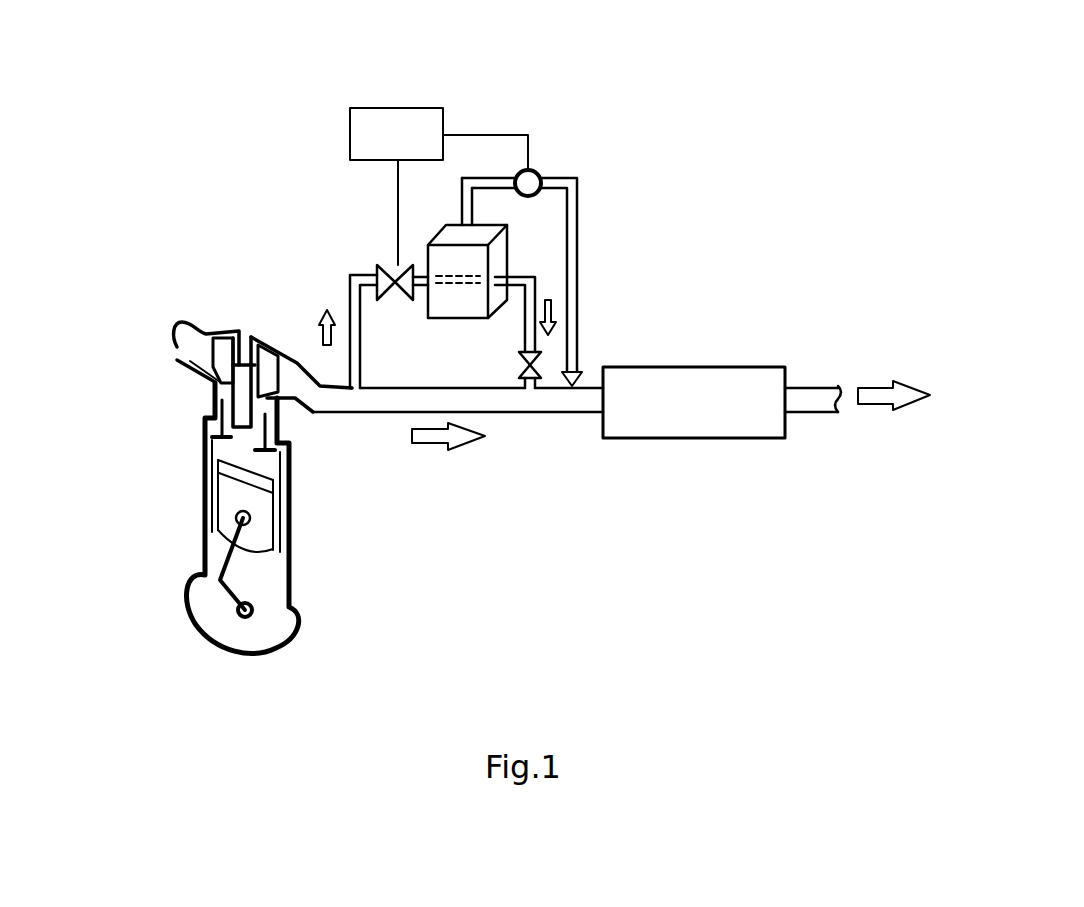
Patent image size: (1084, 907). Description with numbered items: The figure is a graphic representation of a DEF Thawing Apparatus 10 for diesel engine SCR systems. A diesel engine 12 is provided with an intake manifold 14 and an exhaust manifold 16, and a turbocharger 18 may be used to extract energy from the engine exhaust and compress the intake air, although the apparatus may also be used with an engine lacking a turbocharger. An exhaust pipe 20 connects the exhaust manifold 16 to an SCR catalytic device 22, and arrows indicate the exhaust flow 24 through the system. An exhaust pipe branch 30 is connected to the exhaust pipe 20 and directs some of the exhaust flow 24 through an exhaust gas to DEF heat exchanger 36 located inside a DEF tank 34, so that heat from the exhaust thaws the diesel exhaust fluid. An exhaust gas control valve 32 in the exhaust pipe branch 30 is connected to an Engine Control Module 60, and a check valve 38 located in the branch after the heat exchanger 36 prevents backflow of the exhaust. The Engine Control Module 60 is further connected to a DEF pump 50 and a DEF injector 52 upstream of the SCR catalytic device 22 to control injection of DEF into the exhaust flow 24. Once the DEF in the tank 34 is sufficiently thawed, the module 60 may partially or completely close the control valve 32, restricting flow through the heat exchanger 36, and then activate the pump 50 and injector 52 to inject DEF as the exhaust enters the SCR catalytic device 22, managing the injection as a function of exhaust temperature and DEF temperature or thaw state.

The DEF Thawing Apparatus 10 is at (262, 103).
The diesel engine 12 is at (170, 551).
The intake manifold 14 is at (187, 362).
The exhaust manifold 16 is at (308, 410).
The turbocharger 18 is at (238, 327).
The exhaust pipe 20 is at (487, 413).
The SCR catalytic device 22 is at (678, 438).
The exhaust flow 24 is at (322, 328).
The exhaust pipe branch 30 is at (349, 297).
The exhaust gas control valve 32 is at (377, 262).
The DEF tank 34 is at (507, 260).
The exhaust gas to DEF heat exchanger 36 is at (455, 283).
The check valve 38 is at (537, 367).
The DEF pump 50 is at (531, 170).
The DEF injector 52 is at (583, 366).
The Engine Control Module 60 is at (405, 108).